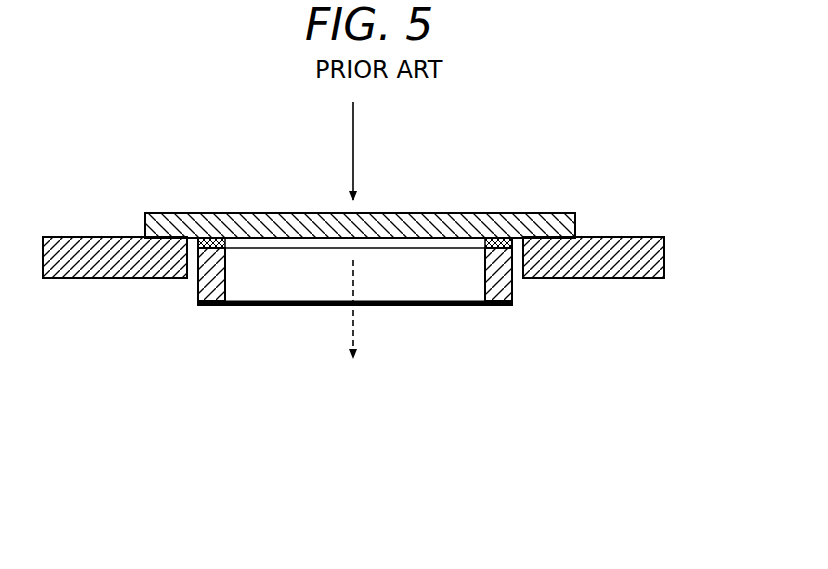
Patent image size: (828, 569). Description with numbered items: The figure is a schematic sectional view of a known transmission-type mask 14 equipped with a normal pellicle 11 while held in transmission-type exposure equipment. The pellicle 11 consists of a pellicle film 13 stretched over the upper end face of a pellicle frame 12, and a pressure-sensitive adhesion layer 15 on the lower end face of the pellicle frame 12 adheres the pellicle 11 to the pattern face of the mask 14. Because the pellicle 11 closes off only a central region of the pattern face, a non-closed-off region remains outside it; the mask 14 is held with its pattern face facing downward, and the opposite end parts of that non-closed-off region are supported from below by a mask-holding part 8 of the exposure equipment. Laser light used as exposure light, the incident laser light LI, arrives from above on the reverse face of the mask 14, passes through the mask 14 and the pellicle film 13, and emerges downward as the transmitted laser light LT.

The mask-holding part 8 is at (664, 258).
The pellicle 11 is at (236, 344).
The pellicle frame 12 is at (507, 290).
The pellicle film 13 is at (450, 306).
The mask 14 is at (525, 215).
The pressure-sensitive adhesion layer 15 is at (492, 236).
The incident laser light LI is at (352, 172).
The transmitted laser light LT is at (353, 332).